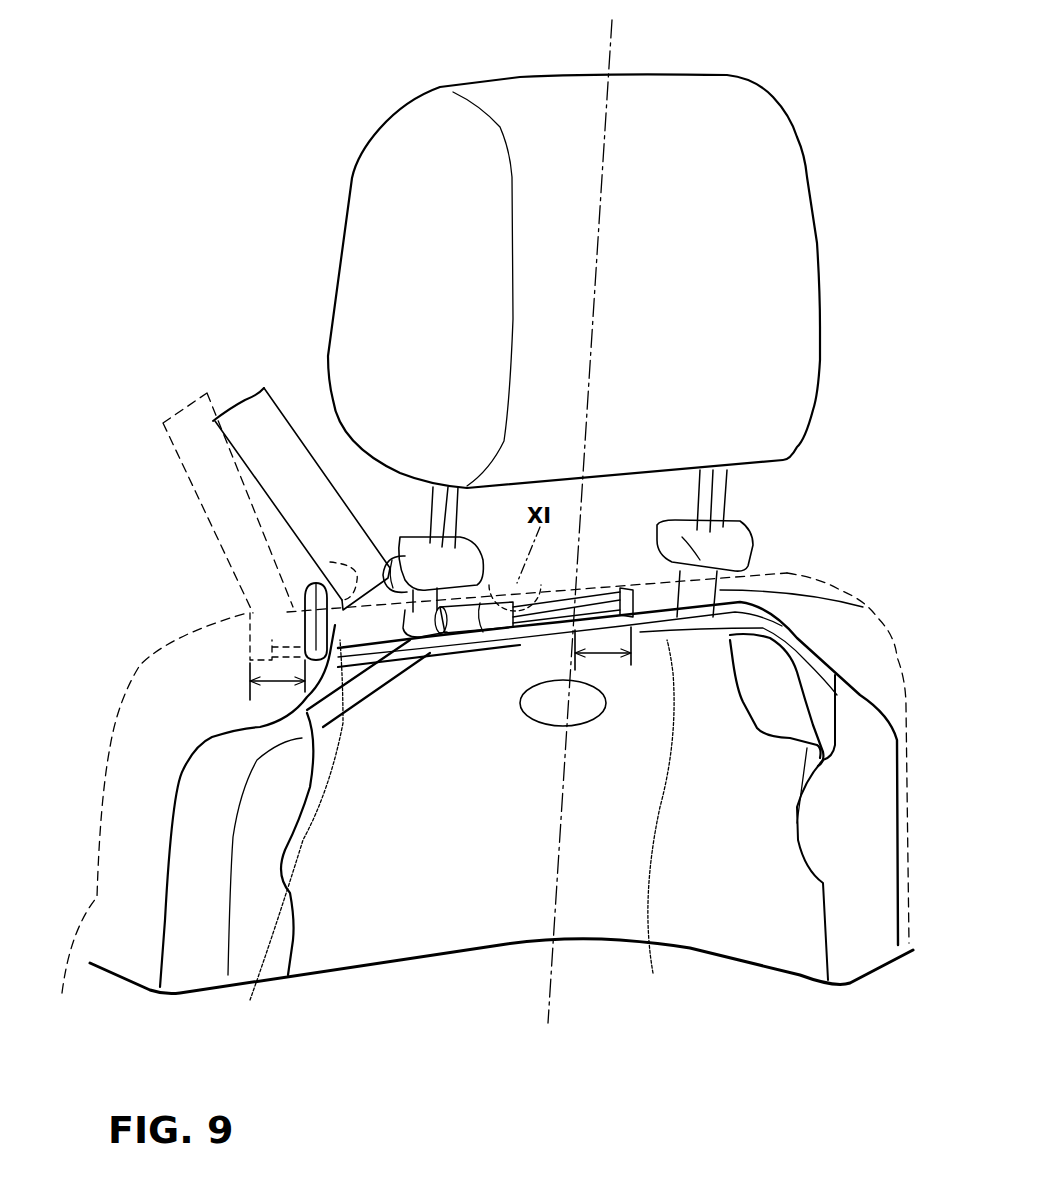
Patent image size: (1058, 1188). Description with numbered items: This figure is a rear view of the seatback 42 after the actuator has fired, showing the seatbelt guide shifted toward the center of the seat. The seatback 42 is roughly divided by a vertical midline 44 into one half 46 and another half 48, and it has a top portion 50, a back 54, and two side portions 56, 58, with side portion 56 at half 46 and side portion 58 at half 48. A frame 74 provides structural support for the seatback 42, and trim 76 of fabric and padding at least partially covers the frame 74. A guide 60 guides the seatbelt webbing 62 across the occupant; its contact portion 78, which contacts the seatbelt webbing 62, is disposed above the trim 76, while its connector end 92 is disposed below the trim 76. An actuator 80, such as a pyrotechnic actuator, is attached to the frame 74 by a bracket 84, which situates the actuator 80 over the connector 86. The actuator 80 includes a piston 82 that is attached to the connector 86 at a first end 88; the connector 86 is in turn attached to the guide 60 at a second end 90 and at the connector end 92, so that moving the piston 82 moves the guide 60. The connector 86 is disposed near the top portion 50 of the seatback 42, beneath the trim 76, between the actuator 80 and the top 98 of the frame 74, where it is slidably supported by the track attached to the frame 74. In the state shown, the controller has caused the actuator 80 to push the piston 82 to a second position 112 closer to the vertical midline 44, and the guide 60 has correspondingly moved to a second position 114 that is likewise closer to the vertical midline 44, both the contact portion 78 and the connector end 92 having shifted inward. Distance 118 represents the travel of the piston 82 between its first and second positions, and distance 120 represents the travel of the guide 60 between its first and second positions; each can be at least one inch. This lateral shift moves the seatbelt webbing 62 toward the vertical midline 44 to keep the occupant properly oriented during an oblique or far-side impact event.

The seatback 42 is at (181, 279).
The vertical midline 44 is at (612, 32).
The one half 46 is at (188, 948).
The another half 48 is at (848, 910).
The top portion 50 is at (247, 613).
The back 54 is at (720, 887).
The side portion 56 is at (97, 897).
The side portion 58 is at (909, 740).
The guide 60 is at (393, 560).
The seatbelt webbing 62 is at (267, 455).
The frame 74 is at (897, 890).
The trim 76 is at (787, 573).
The contact portion 78 is at (290, 836).
The actuator 80 is at (505, 640).
The piston 82 is at (553, 640).
The bracket 84 is at (463, 640).
The connector 86 is at (372, 640).
The first end 88 is at (658, 818).
The second end 90 is at (300, 722).
The connector end 92 is at (305, 640).
The top of the frame 98 is at (863, 607).
The second position 112 is at (607, 567).
The second position 114 is at (403, 527).
The distance 118 is at (610, 640).
The distance 120 is at (305, 688).